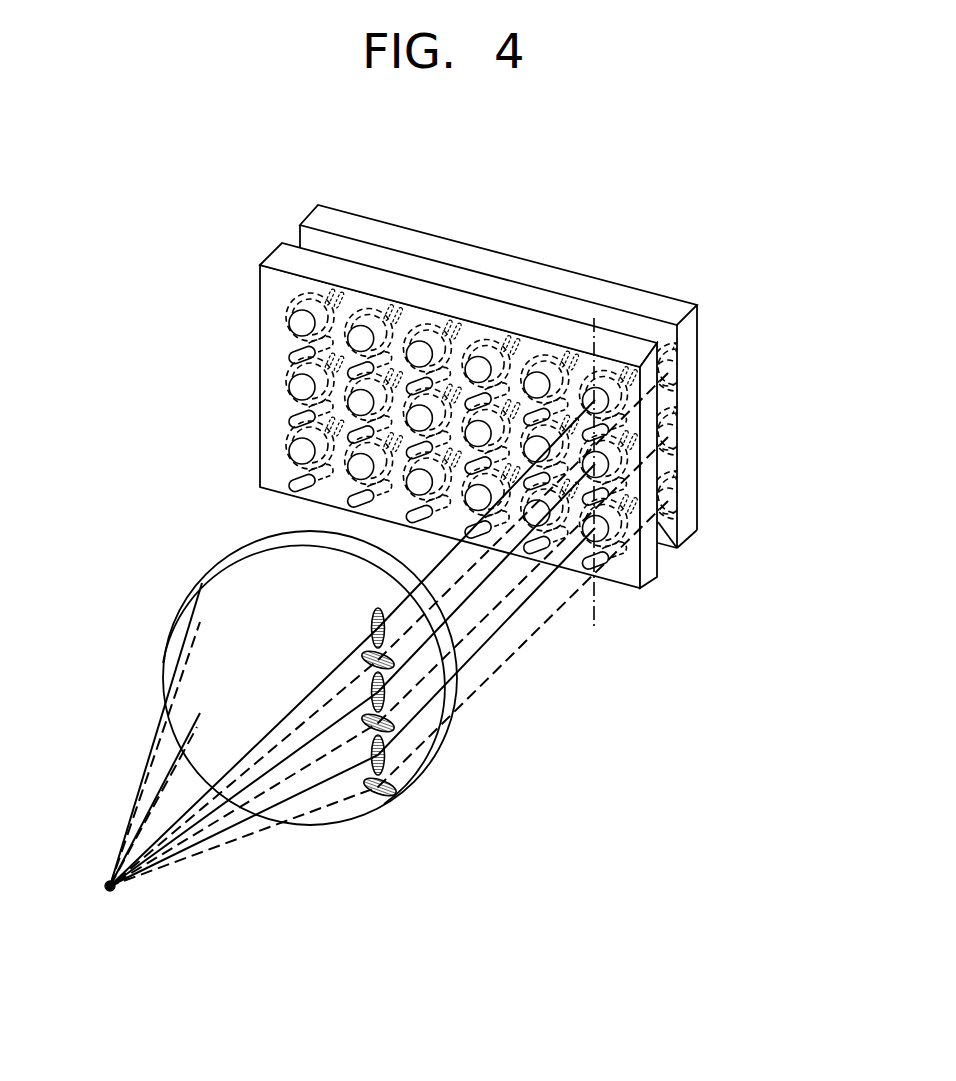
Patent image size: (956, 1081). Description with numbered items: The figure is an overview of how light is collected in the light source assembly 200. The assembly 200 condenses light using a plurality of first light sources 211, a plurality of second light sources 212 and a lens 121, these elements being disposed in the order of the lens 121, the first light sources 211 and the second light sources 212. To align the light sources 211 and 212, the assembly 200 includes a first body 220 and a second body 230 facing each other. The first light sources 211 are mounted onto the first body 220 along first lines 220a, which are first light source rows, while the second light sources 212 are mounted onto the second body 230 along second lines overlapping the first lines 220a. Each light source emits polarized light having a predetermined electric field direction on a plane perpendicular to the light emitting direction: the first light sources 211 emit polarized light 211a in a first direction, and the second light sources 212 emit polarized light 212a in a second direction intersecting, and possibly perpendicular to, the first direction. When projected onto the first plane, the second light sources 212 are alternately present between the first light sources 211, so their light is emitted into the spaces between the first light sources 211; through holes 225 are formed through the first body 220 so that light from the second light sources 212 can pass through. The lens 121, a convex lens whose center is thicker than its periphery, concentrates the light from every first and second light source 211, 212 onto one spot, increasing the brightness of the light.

The light source assembly 200 is at (178, 293).
The first body 220 is at (434, 454).
The second body 230 is at (544, 374).
The through holes 225 is at (294, 412).
The first light sources 211 is at (612, 548).
The second light sources 212 is at (697, 530).
The first lines 220a is at (593, 607).
The polarized light in a first direction 211a is at (385, 760).
The polarized light in a second direction 212a is at (393, 785).
The lens 121 is at (345, 810).